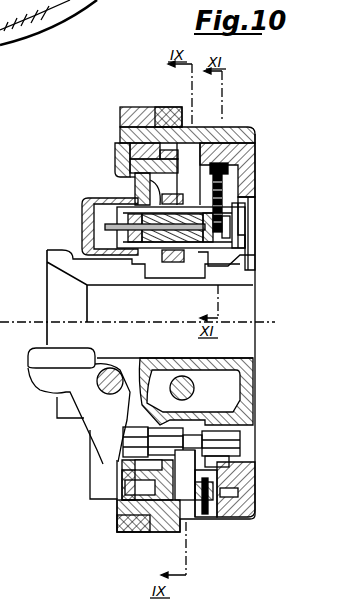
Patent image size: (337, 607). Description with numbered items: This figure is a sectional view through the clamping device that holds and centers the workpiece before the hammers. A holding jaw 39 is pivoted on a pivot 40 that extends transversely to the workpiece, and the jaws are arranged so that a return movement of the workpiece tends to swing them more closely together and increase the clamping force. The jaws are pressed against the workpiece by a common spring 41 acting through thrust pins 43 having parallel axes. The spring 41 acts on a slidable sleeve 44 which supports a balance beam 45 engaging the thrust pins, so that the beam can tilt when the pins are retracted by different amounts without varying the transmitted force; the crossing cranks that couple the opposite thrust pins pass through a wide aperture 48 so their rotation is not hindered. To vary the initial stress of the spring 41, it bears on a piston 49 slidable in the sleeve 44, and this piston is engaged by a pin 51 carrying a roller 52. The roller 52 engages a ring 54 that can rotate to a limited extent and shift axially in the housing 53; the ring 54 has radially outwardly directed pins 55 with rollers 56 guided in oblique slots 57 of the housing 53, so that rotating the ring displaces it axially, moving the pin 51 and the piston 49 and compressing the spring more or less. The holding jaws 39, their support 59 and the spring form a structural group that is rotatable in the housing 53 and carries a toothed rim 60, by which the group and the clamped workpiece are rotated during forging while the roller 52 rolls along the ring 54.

The holding jaw 39 is at (58, 379).
The pivot 40 is at (118, 395).
The spring 41 is at (83, 240).
The thrust pin 43 is at (227, 442).
The slidable sleeve 44 is at (227, 253).
The balance beam 45 is at (163, 198).
The aperture 48 is at (1, 60).
The piston 49 is at (222, 232).
The pin 51 is at (252, 185).
The roller 52 is at (240, 168).
The housing 53 is at (176, 112).
The ring 54 is at (223, 157).
The radial pin 55 is at (207, 520).
The roller 56 is at (240, 503).
The oblique slot 57 is at (198, 515).
The support 59 is at (105, 272).
The toothed rim 60 is at (157, 484).